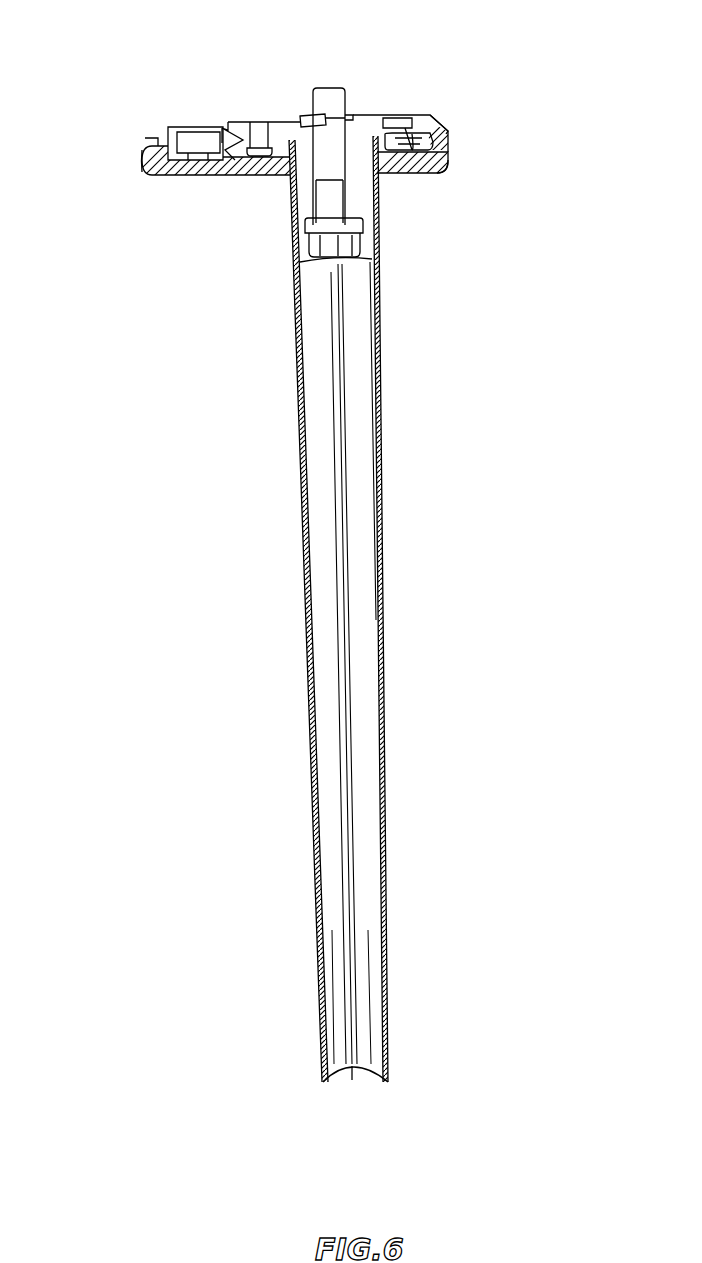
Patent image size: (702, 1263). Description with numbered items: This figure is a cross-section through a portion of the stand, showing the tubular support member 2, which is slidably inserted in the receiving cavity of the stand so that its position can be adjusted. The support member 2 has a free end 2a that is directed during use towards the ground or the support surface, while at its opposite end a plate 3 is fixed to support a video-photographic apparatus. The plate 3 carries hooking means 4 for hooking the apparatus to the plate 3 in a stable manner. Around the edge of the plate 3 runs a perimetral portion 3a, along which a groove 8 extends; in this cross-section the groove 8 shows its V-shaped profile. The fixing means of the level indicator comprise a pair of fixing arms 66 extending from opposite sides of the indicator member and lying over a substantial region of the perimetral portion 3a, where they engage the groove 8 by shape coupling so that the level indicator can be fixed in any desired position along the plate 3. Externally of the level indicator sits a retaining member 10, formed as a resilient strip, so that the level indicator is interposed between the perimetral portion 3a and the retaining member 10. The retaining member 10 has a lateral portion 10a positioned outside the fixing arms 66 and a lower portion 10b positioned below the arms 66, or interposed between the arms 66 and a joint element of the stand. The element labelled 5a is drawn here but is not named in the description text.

The support member 2 is at (383, 678).
The free end 2a is at (352, 1068).
The plate 3 is at (423, 117).
The perimetral portion 3a is at (440, 117).
The hooking means 4 is at (347, 88).
The sensor box 5a is at (195, 140).
The groove 8 is at (245, 128).
The retaining member 10 is at (142, 198).
The lateral portion 10a is at (142, 165).
The lower portion 10b is at (445, 168).
The fixing arms 66 is at (237, 156).